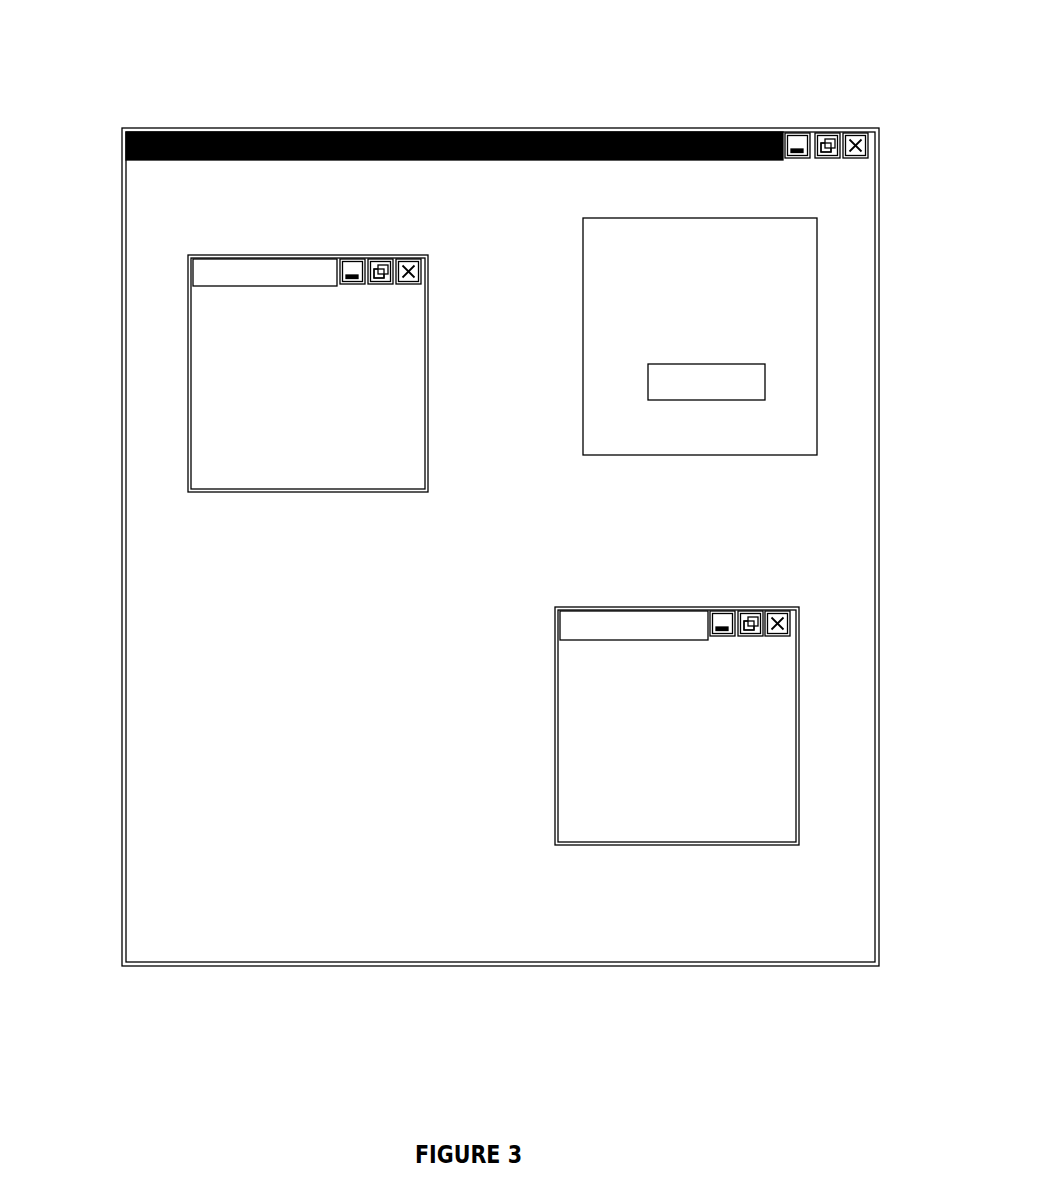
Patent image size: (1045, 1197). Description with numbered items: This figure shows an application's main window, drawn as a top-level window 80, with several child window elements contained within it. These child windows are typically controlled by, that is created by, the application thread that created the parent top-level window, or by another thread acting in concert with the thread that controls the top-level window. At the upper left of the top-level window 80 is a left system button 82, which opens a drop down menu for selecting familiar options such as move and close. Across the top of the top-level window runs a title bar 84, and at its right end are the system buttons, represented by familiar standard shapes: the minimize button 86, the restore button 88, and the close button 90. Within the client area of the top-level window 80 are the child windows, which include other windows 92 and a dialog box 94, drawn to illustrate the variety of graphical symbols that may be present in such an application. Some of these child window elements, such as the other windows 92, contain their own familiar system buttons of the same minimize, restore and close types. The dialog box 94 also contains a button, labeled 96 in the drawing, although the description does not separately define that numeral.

The top-level window 80 is at (204, 70).
The left system button 82 is at (132, 131).
The title bar 84 is at (361, 131).
The minimize button 86 is at (786, 132).
The restore button 88 is at (820, 132).
The close button 90 is at (848, 132).
The other windows 92 is at (172, 337).
The dialog box 94 is at (836, 318).
The OK button 96 is at (783, 382).